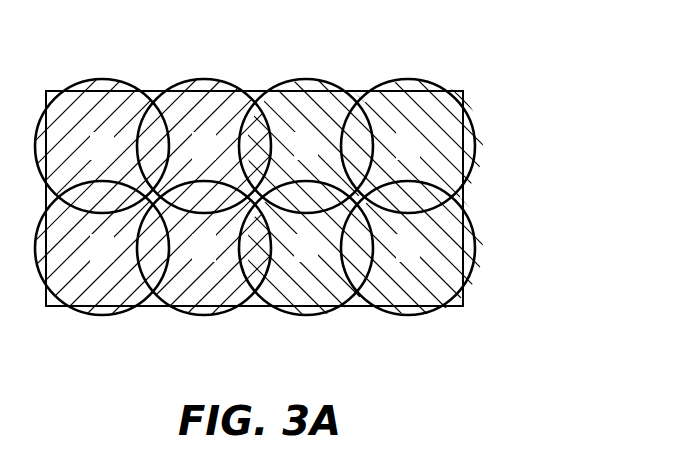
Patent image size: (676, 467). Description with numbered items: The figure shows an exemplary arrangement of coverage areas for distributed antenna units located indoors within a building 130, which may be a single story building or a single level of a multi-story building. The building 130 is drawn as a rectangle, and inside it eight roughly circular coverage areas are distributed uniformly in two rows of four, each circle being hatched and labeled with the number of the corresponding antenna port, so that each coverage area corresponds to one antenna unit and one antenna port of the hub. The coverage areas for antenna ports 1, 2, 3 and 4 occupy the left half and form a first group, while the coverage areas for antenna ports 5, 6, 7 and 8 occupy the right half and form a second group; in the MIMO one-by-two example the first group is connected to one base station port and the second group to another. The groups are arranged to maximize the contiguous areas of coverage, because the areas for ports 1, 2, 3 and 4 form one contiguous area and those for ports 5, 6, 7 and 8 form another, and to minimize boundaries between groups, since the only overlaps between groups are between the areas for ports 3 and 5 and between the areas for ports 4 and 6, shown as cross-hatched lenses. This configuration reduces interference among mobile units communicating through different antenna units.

The building 130 is at (463, 193).
The antenna port 1 is at (102, 146).
The antenna port 2 is at (102, 248).
The antenna port 3 is at (204, 146).
The antenna port 4 is at (204, 248).
The antenna port 5 is at (306, 146).
The antenna port 6 is at (306, 248).
The antenna port 7 is at (408, 146).
The antenna port 8 is at (408, 248).